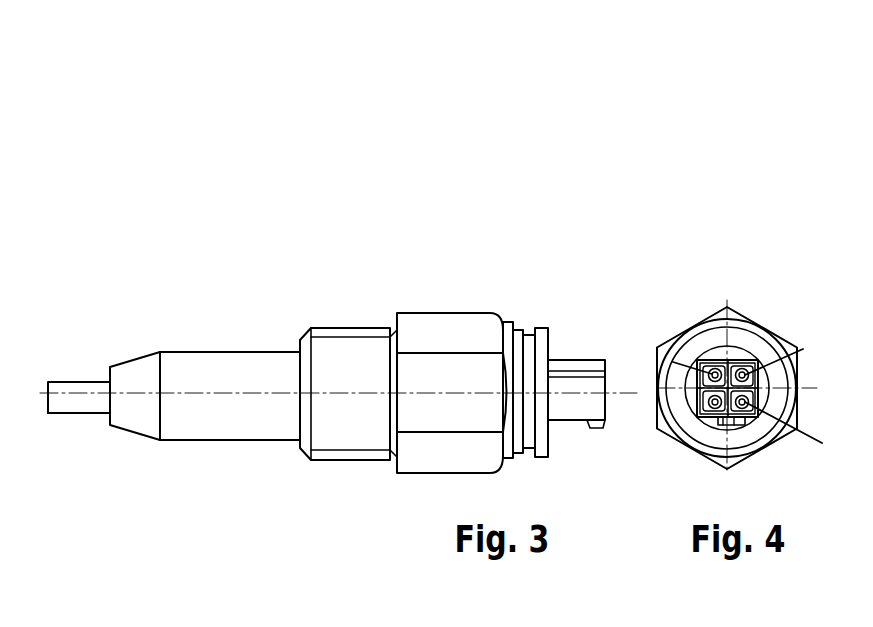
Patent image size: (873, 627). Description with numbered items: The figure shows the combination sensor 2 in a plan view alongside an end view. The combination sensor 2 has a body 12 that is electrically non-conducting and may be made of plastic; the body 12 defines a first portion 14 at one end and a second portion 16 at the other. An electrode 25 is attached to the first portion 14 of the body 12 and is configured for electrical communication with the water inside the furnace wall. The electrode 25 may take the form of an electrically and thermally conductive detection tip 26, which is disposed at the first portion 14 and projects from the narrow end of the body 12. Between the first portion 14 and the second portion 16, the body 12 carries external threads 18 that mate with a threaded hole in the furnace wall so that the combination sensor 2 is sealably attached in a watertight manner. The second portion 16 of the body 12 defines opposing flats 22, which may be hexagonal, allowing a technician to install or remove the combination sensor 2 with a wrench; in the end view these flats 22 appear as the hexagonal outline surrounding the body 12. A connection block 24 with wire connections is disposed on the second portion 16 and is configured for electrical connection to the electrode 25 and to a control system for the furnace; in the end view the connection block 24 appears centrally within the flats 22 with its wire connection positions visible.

In FIG. 3, the combination sensor 2 is at (224, 122).
In FIG. 3, the body 12 is at (434, 324).
In FIG. 3, the first portion 14 is at (166, 350).
In FIG. 3, the second portion 16 is at (597, 347).
In FIG. 4, the second portion 16 is at (680, 321).
In FIG. 3, the external threads 18 is at (337, 430).
In FIG. 3, the opposing flats 22 is at (463, 343).
In FIG. 4, the opposing flats 22 is at (743, 353).
In FIG. 3, the connection block 24 is at (630, 427).
In FIG. 4, the connection block 24 is at (700, 409).
In FIG. 3, the electrode 25 is at (83, 410).
In FIG. 3, the detection tip 26 is at (93, 384).